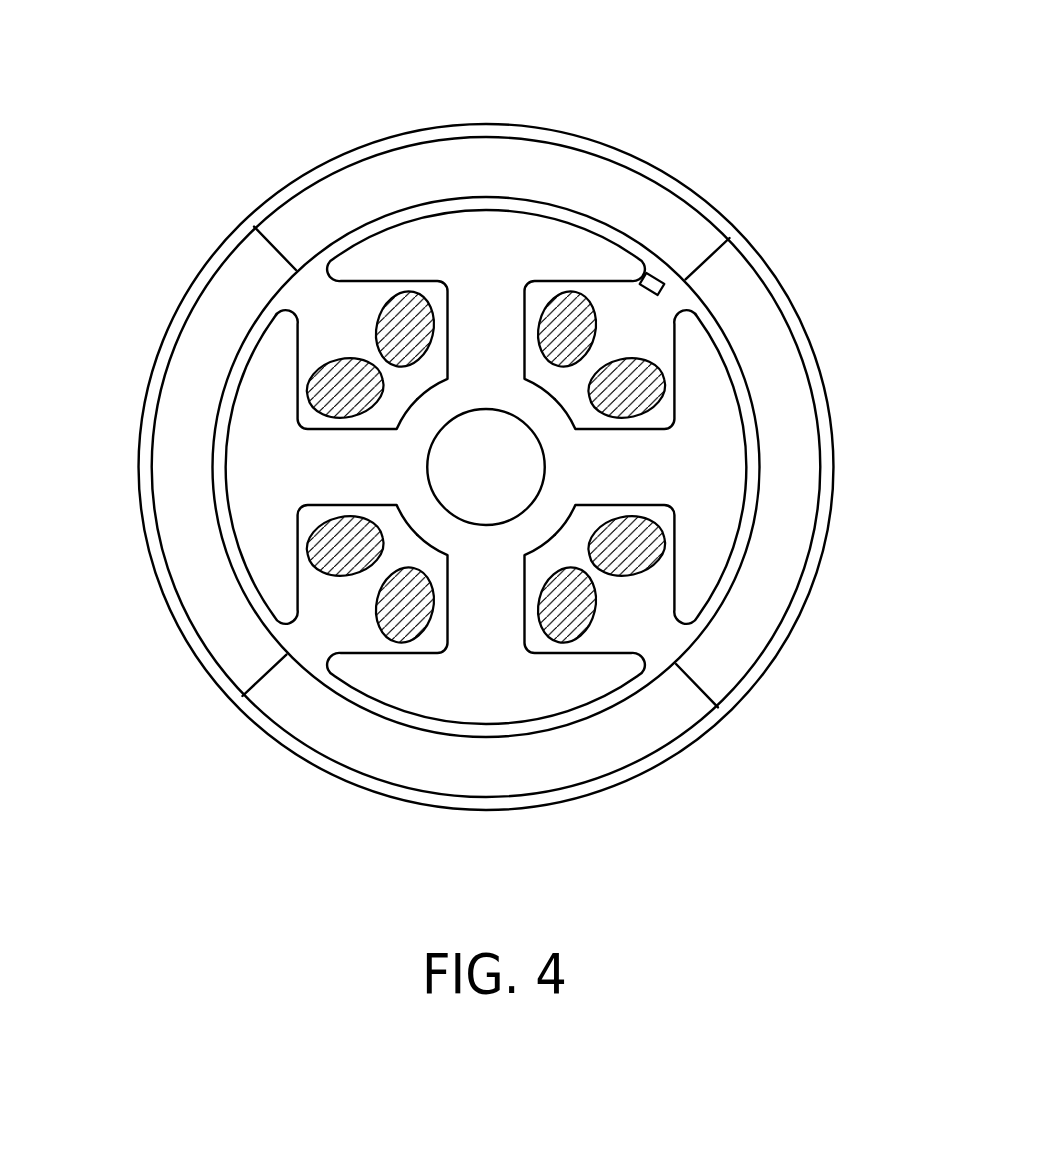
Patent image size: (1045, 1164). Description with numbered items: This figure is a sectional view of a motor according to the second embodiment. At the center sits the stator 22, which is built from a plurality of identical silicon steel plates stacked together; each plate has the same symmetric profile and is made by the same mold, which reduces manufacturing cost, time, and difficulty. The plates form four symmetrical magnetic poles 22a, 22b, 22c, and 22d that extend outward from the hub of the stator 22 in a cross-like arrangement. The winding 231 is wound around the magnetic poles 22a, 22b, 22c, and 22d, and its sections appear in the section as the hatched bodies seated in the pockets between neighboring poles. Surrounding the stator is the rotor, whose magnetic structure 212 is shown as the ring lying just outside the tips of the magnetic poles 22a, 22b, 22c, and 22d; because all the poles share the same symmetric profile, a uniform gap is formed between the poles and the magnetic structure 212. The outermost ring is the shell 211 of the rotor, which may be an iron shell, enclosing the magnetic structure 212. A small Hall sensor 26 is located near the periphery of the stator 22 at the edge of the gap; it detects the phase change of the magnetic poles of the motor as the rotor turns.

The shell 211 is at (822, 445).
The magnetic structure 212 is at (768, 382).
The stator 22 is at (490, 310).
The magnetic pole 22a is at (427, 248).
The magnetic pole 22b is at (256, 489).
The magnetic pole 22c is at (513, 690).
The magnetic pole 22d is at (697, 502).
The winding 231 is at (407, 337).
The Hall sensor 26 is at (655, 277).